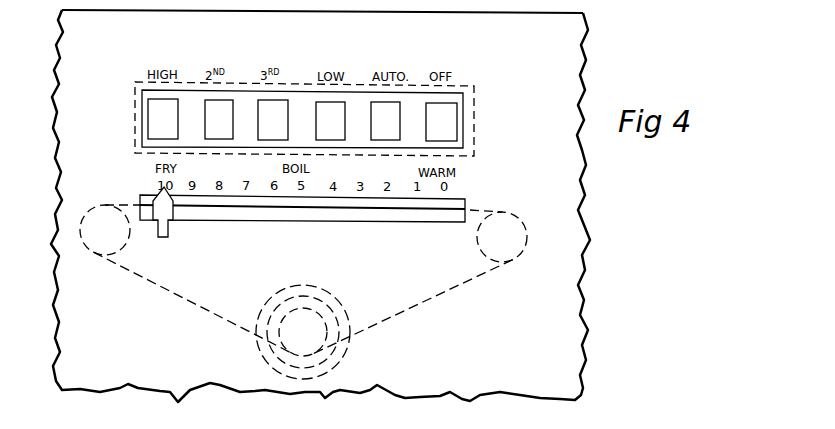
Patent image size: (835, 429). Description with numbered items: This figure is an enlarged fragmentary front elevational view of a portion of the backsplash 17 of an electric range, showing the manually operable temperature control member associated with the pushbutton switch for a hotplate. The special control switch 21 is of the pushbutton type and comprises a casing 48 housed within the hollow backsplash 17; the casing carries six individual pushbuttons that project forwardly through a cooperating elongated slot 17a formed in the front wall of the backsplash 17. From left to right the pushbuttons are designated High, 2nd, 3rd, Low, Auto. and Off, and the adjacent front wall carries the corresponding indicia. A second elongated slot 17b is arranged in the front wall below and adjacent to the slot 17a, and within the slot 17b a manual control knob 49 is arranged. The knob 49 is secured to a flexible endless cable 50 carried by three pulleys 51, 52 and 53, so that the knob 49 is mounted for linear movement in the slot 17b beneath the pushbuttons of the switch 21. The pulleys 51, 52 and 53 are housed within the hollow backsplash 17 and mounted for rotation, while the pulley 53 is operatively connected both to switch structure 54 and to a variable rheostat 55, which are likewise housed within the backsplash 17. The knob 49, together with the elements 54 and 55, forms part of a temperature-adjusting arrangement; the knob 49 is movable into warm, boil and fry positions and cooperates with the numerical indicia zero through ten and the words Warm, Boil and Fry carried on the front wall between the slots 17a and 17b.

The backsplash 17 is at (573, 100).
The elongated slot 17a is at (146, 131).
The elongated slot 17b is at (347, 217).
The control switch 21 is at (462, 120).
The casing 48 is at (148, 108).
The manual control knob 49 is at (167, 224).
The flexible endless cable 50 is at (413, 210).
The pulley 51 is at (118, 240).
The pulley 52 is at (527, 243).
The pulley 53 is at (318, 317).
The switch structure 54 is at (330, 356).
The variable rheostat 55 is at (264, 304).